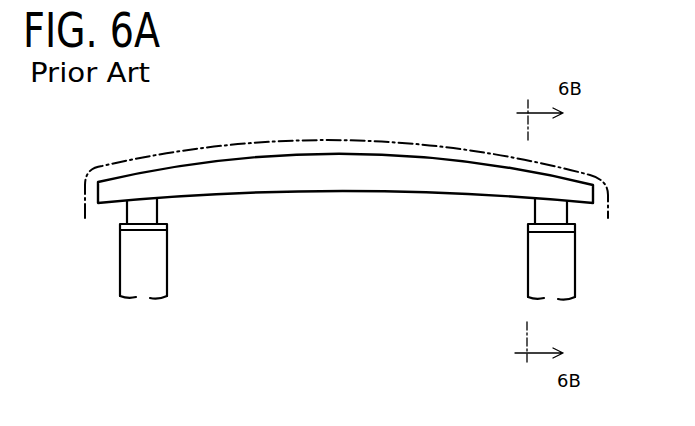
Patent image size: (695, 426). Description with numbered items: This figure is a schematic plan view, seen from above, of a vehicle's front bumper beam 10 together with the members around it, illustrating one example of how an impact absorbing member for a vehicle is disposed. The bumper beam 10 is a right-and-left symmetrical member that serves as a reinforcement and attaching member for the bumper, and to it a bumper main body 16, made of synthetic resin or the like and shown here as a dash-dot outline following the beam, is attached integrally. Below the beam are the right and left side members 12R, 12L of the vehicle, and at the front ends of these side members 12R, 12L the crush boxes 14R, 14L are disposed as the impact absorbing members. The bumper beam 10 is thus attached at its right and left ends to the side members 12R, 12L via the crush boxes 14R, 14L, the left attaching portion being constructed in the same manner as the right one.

The front bumper beam 10 is at (340, 190).
The left side member 12L is at (153, 280).
The right side member 12R is at (560, 278).
The left crush box 14L is at (147, 210).
The right crush box 14R is at (542, 210).
The bumper main body 16 is at (402, 143).